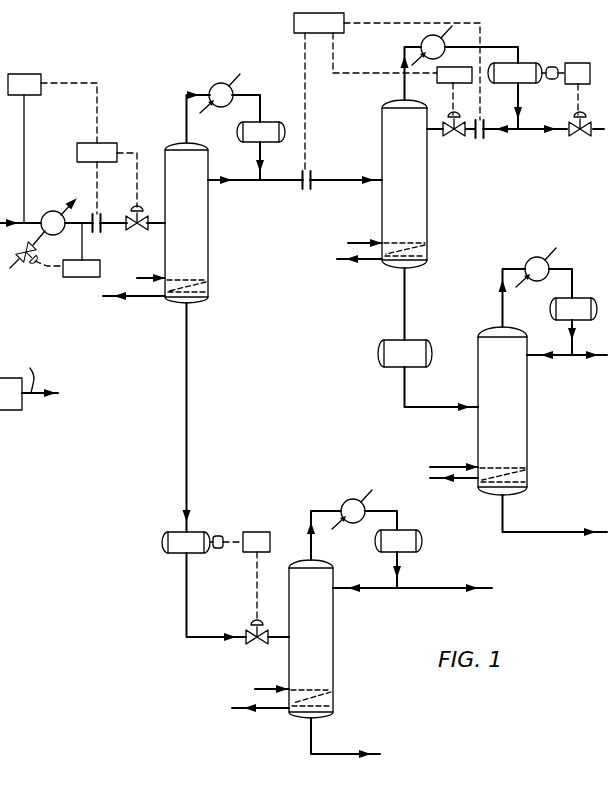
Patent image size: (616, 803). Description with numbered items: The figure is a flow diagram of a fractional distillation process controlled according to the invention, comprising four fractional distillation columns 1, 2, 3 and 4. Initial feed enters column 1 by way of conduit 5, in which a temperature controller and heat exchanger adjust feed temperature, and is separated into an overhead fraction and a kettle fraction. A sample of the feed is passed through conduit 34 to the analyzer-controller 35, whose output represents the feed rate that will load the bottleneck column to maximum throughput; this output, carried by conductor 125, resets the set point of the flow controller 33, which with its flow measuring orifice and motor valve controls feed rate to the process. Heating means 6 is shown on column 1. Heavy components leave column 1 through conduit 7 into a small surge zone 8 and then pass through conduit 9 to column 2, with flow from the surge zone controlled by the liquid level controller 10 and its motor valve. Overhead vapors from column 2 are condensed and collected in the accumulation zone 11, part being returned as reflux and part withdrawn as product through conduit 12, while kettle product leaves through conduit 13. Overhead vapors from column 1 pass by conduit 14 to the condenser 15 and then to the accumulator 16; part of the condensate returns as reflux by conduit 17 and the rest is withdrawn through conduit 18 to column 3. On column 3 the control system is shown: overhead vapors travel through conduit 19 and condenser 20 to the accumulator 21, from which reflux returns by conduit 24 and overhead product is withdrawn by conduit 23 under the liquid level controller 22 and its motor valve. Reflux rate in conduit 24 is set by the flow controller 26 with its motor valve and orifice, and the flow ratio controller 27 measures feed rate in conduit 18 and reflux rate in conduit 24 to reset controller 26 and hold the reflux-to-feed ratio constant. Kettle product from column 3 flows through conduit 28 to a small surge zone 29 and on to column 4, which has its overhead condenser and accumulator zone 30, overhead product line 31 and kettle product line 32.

The fractional distillation column 1 is at (190, 209).
The fractional distillation column 2 is at (316, 657).
The fractional distillation column 3 is at (409, 170).
The fractional distillation column 4 is at (508, 401).
The conduit 5 is at (0, 241).
The heating means 6 is at (150, 300).
The conduit 7 is at (187, 380).
The surge zone 8 is at (162, 544).
The conduit 9 is at (184, 637).
The liquid level controller 10 is at (270, 541).
The accumulation zone 11 is at (422, 542).
The conduit 12 is at (438, 590).
The conduit 13 is at (328, 756).
The conduit 14 is at (198, 92).
The condenser 15 is at (229, 86).
The accumulator 16 is at (258, 140).
The conduit 17 is at (246, 184).
The conduit 18 is at (292, 184).
The conduit 19 is at (400, 54).
The condenser 20 is at (421, 41).
The accumulator 21 is at (492, 84).
The liquid level controller 22 is at (565, 84).
The conduit 23 is at (598, 135).
The conduit 24 is at (515, 131).
The flow controller 26 is at (445, 83).
The flow ratio controller 27 is at (294, 31).
The conduit 28 is at (403, 310).
The surge zone 29 is at (390, 345).
The overhead condenser and accumulator zone 30 is at (553, 309).
The overhead product line 31 is at (577, 353).
The kettle product line 32 is at (533, 531).
The flow controller 33 is at (108, 143).
The conduit 34 is at (24, 134).
The analyzer-controller 35 is at (32, 95).
The conductor 125 is at (31, 398).